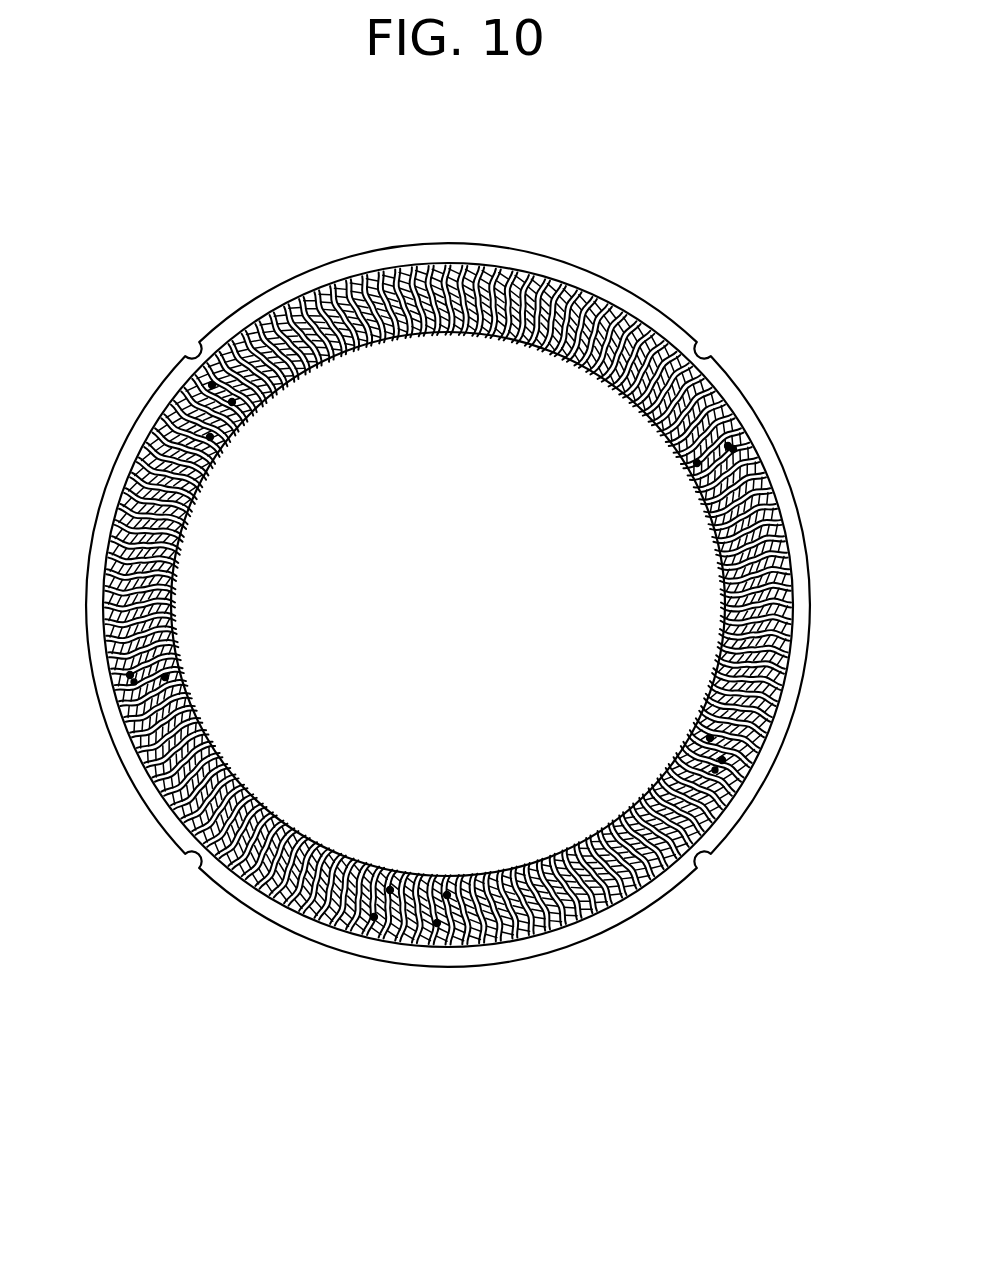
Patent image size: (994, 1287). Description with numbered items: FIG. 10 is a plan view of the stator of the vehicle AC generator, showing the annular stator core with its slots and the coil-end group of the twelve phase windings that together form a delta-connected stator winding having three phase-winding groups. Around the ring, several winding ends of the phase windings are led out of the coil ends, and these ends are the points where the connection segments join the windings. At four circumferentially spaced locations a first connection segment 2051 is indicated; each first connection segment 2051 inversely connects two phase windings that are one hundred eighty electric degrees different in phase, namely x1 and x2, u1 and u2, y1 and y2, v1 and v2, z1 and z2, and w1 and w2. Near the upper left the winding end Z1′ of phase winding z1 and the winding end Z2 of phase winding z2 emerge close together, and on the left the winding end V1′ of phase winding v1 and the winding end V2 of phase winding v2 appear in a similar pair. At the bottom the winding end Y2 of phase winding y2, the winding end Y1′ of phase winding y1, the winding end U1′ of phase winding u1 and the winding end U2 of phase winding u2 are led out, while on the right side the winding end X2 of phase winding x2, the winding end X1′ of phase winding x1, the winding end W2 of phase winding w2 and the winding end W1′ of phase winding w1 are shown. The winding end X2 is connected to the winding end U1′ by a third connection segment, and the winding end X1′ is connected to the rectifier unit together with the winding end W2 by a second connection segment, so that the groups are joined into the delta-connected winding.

The first connection segment 2051 is at (208, 440).
The winding end of phase winding z1 Z1′ is at (212, 387).
The winding end of phase winding z2 Z2 is at (232, 402).
The winding end of phase winding v1 V1′ is at (165, 676).
The winding end of phase winding v2 V2 is at (134, 682).
The winding end of phase winding y2 Y2 is at (390, 890).
The winding end of phase winding u1 U1′ is at (447, 895).
The winding end of phase winding y1 Y1′ is at (374, 917).
The winding end of phase winding u2 U2 is at (437, 923).
The winding end of phase winding x2 X2 is at (710, 738).
The winding end of phase winding x1 X1′ is at (715, 770).
The winding end of phase winding w2 W2 is at (733, 448).
The winding end of phase winding w1 W1′ is at (697, 463).